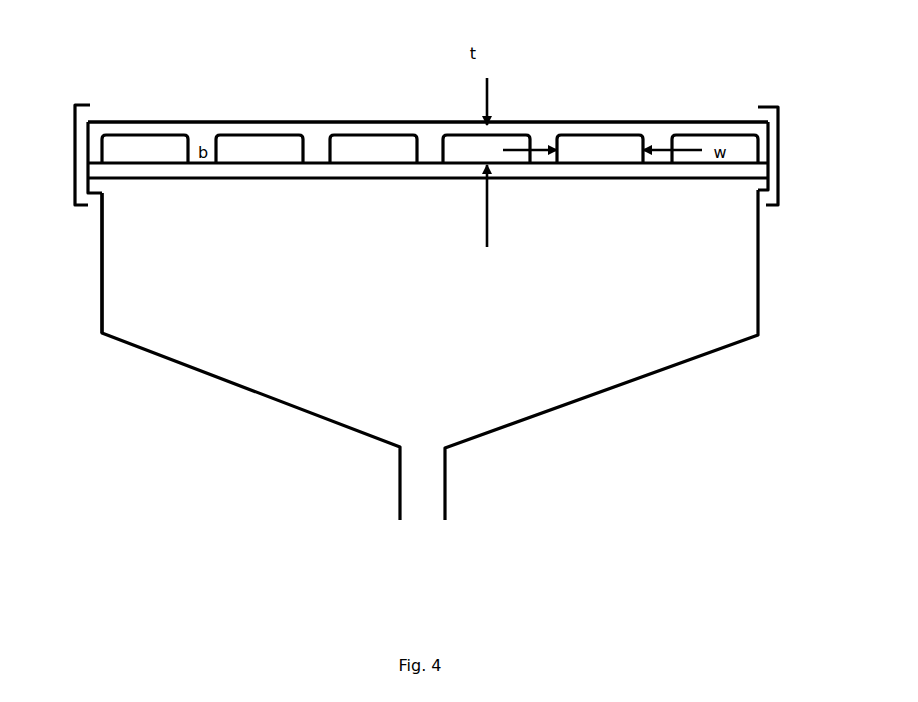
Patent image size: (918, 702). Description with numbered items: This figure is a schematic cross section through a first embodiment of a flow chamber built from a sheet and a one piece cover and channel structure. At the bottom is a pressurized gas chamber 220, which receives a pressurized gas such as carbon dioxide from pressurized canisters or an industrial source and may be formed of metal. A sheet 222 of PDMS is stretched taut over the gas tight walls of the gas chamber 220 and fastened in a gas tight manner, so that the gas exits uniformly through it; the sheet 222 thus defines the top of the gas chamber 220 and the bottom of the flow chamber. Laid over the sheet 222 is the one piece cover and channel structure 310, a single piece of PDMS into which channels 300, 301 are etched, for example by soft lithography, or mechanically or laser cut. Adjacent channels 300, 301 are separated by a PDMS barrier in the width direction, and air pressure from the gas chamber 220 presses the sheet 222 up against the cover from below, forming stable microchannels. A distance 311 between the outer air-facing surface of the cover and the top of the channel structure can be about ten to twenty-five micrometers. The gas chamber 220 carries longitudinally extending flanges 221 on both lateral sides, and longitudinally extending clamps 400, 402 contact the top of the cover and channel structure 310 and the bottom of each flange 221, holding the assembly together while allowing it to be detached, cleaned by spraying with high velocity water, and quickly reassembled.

The pressurized gas chamber 220 is at (287, 307).
The flange 221 is at (97, 193).
The sheet 222 is at (372, 163).
The channel 300 is at (145, 150).
The channel 301 is at (260, 150).
The one piece cover and channel structure 310 is at (312, 137).
The distance 311 is at (602, 208).
The clamp 400 is at (765, 207).
The clamp 402 is at (75, 207).